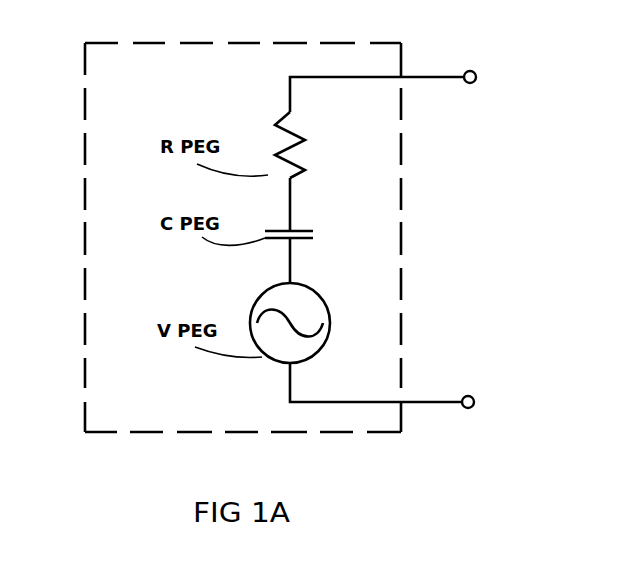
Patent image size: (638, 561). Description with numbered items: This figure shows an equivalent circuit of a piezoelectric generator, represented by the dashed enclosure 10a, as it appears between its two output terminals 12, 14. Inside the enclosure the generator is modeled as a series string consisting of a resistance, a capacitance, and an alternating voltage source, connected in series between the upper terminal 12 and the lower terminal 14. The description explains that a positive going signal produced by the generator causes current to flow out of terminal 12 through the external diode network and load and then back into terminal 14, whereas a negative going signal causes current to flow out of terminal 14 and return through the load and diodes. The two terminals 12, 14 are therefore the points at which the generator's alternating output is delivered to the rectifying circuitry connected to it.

The equivalent circuit model of piezoelectric gyroscope 10a is at (155, 43).
The terminal 12 is at (417, 75).
The terminal 14 is at (467, 409).